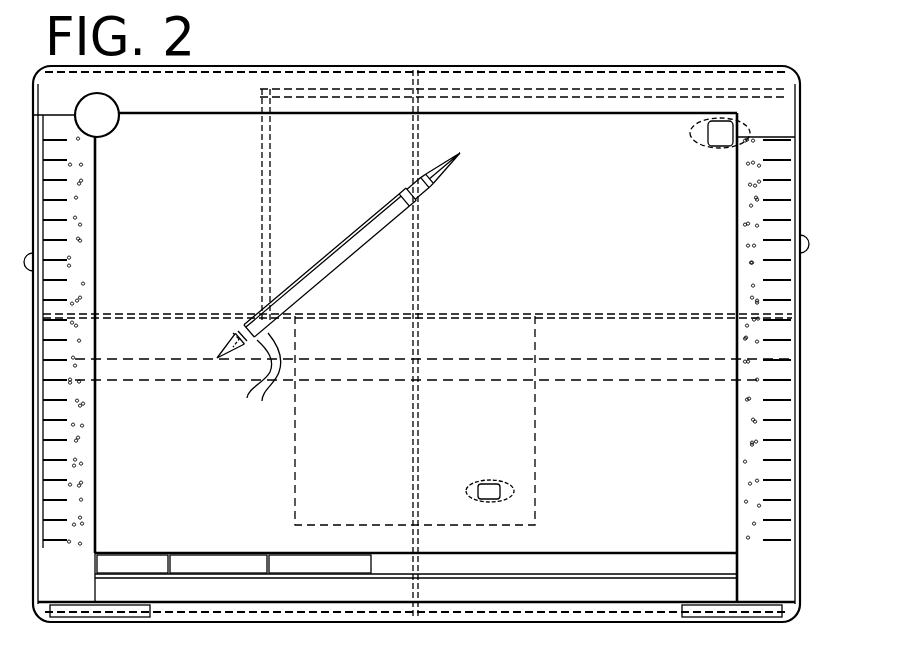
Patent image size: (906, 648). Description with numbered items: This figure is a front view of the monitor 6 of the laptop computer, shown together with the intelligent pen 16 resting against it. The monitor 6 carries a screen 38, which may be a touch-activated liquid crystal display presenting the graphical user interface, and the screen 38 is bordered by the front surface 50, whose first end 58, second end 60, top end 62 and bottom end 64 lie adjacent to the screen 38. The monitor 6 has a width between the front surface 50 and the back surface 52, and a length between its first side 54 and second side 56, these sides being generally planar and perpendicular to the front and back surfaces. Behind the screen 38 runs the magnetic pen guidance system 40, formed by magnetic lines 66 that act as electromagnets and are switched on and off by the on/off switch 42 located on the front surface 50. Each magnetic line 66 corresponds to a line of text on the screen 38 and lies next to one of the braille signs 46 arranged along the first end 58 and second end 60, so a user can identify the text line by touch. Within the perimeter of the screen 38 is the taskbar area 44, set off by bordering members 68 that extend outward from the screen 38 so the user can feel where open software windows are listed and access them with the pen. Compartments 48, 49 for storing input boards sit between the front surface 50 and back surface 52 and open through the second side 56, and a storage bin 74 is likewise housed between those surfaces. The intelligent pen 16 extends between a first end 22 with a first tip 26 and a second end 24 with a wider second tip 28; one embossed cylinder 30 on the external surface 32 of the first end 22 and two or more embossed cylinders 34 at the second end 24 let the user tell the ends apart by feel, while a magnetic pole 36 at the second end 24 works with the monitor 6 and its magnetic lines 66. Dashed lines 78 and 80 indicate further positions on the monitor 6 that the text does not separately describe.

The monitor 6 is at (250, 78).
The intelligent pen 16 is at (342, 233).
The first end 22 is at (437, 200).
The second end 24 is at (263, 310).
The first tip 26 is at (467, 153).
The second tip 28 is at (220, 357).
The embossed cylinder 30 is at (402, 182).
The external surface 32 is at (382, 220).
The embossed cylinders 34 is at (263, 380).
The magnetic pole 36 is at (230, 337).
The screen 38 is at (180, 125).
The magnetic pen guidance system 40 is at (663, 380).
The on/off switch 42 is at (100, 118).
The taskbar area 44 is at (722, 565).
The braille signs 46 is at (70, 202).
The compartment 48 is at (283, 103).
The compartment 49 is at (338, 97).
The front surface 50 is at (60, 573).
The back surface 52 is at (760, 112).
The first side 54 is at (45, 270).
The second side 56 is at (737, 252).
The first end 58 is at (97, 550).
The second end 60 is at (760, 560).
The top end 62 is at (203, 77).
The bottom end 64 is at (663, 590).
The magnetic lines 66 is at (610, 380).
The bordering members 68 is at (697, 553).
The storage bin 74 is at (523, 417).
The vertical center dashed line 78 is at (420, 243).
The horizontal dashed line 80 is at (127, 313).